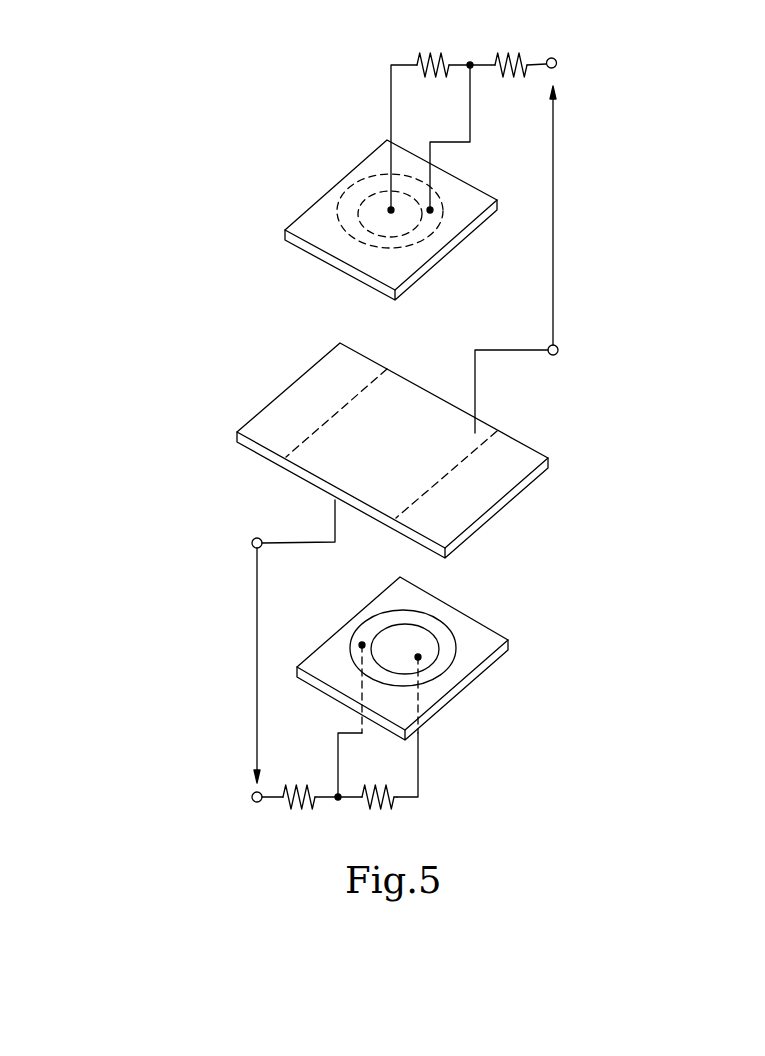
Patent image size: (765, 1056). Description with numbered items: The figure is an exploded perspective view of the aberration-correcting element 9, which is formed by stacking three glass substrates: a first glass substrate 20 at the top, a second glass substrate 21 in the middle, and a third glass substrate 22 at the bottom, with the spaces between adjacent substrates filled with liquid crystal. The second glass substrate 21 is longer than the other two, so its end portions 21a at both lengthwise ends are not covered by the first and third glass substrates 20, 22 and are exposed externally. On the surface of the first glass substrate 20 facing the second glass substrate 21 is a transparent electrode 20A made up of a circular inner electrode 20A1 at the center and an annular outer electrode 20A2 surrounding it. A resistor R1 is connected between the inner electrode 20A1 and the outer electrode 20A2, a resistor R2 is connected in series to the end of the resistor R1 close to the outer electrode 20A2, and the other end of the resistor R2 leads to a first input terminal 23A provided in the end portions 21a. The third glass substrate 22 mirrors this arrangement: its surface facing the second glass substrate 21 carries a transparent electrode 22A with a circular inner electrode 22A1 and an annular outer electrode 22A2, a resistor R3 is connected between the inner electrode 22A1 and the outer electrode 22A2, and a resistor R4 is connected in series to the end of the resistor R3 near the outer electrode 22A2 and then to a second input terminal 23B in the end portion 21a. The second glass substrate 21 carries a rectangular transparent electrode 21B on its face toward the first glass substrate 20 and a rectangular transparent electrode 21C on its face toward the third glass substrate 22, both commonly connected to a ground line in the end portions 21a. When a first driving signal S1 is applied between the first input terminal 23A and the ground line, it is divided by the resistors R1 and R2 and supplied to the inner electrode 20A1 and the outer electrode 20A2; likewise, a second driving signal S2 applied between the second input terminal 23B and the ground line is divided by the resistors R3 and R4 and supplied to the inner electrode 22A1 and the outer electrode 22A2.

The aberration-correcting element 9 is at (197, 530).
The first glass substrate 20 is at (283, 230).
The transparent electrode 20A is at (399, 203).
The inner electrode 20A1 is at (421, 226).
The outer electrode 20A2 is at (417, 243).
The resistor R1 is at (443, 50).
The resistor R2 is at (508, 50).
The first input terminal 23A is at (556, 59).
The first driving signal S1 is at (553, 193).
The second glass substrate 21 is at (513, 505).
The end portions 21a is at (298, 400).
The rectangular transparent electrode 21B is at (413, 410).
The rectangular transparent electrode 21C is at (303, 483).
The third glass substrate 22 is at (510, 648).
The transparent electrode 22A is at (468, 664).
The inner electrode 22A1 is at (440, 655).
The outer electrode 22A2 is at (437, 677).
The resistor R3 is at (367, 813).
The resistor R4 is at (300, 813).
The second input terminal 23B is at (252, 801).
The second driving signal S2 is at (256, 678).